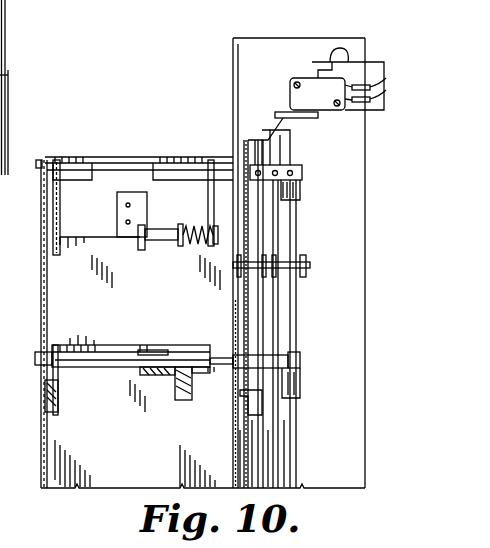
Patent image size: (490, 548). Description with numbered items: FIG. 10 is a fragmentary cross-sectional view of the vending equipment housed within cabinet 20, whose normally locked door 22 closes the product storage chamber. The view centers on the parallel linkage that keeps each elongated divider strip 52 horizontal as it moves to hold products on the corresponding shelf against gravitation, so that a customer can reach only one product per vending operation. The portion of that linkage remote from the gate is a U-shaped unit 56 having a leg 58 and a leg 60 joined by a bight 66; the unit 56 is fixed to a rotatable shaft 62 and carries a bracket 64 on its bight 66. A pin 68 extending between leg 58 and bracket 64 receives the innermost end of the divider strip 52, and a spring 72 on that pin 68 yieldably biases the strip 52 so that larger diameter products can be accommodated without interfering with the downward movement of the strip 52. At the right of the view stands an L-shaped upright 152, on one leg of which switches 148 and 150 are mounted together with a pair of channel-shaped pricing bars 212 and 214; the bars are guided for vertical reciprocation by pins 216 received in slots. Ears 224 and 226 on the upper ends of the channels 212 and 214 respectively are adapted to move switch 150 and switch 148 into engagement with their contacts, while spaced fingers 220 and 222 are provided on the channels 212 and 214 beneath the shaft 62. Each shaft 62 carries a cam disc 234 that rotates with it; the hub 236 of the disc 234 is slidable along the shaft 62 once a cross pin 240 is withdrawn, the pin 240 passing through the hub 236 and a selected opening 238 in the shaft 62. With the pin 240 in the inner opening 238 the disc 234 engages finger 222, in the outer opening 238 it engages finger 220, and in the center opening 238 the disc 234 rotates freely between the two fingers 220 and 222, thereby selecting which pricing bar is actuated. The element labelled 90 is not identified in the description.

The cabinet 20 is at (2, 92).
The door 22 is at (20, 87).
The divider strip 52 is at (178, 250).
The unit 56 is at (87, 245).
The leg 58 is at (207, 188).
The leg 60 is at (60, 211).
The shaft 62 is at (40, 160).
The bracket 64 is at (126, 240).
The bight 66 is at (105, 170).
The pin 68 is at (218, 244).
The spring 72 is at (194, 228).
The base 90 is at (41, 467).
The switch 148 is at (276, 118).
The switch 150 is at (283, 118).
The L-shaped upright 152 is at (238, 47).
The pricing bar 212 is at (280, 290).
The pricing bar 214 is at (278, 300).
The pin 216 is at (302, 266).
The finger 220 is at (300, 392).
The finger 222 is at (262, 405).
The ear 224 is at (272, 112).
The ear 226 is at (268, 137).
The cam disc 234 is at (300, 192).
The hub 236 is at (300, 362).
The opening 238 is at (296, 164).
The cross pin 240 is at (258, 155).